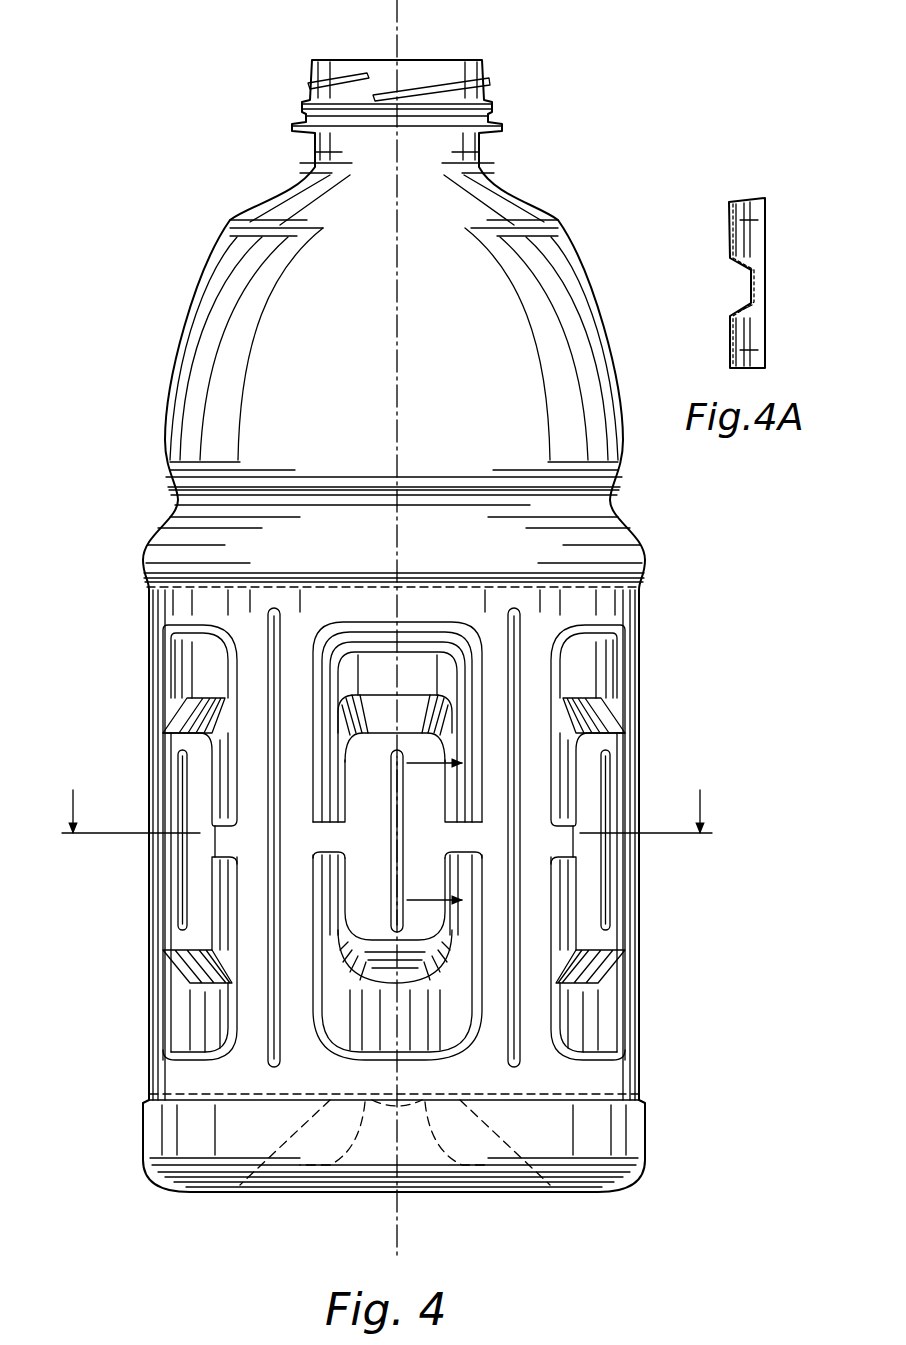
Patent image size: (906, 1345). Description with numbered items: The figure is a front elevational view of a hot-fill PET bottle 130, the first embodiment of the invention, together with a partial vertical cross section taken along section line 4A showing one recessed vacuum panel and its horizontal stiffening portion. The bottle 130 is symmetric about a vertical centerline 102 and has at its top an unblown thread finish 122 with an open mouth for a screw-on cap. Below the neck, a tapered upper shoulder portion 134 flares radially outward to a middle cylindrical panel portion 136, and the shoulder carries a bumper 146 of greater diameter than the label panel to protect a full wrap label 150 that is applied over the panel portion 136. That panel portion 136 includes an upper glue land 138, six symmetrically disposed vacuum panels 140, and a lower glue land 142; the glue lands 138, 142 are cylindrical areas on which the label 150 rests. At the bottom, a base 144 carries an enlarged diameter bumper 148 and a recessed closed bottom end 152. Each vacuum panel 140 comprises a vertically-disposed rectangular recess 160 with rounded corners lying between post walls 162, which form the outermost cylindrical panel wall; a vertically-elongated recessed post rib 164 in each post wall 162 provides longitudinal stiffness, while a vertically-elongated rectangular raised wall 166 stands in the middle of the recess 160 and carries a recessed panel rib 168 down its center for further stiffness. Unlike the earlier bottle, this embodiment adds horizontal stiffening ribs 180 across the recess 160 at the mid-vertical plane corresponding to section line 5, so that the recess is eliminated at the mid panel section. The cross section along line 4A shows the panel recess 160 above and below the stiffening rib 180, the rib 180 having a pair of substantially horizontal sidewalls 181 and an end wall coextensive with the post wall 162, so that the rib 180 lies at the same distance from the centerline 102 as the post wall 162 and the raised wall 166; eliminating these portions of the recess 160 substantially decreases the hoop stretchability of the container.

In FIG. 4, the vertical centerline 102 is at (398, 42).
In FIG. 4, the thread finish 122 is at (306, 102).
In FIG. 4, the bottle 130 is at (170, 330).
In FIG. 4, the upper shoulder portion 134 is at (200, 280).
In FIG. 4, the panel portion 136 is at (147, 650).
In FIG. 4, the upper glue land 138 is at (615, 600).
In FIG. 4, the vacuum panel 140 is at (380, 660).
In FIG. 4, the lower glue land 142 is at (620, 1075).
In FIG. 4, the base 144 is at (630, 1168).
In FIG. 4, the bumper 146 is at (642, 558).
In FIG. 4, the bumper 148 is at (640, 1108).
In FIG. 4, the label 150 is at (147, 592).
In FIG. 4, the recessed closed bottom end 152 is at (490, 1165).
In FIG. 4, the vacuum panel recess 160 is at (412, 650).
In FIG. 4A, the vacuum panel recess 160 is at (745, 232).
In FIG. 4, the post wall 162 is at (290, 655).
In FIG. 4A, the post wall 162 is at (765, 338).
In FIG. 4, the post rib 164 is at (275, 712).
In FIG. 4, the raised wall 166 is at (170, 790).
In FIG. 4, the panel rib 168 is at (180, 772).
In FIG. 4, the horizontal stiffening rib 180 is at (200, 890).
In FIG. 4A, the horizontal stiffening rib 180 is at (762, 285).
In FIG. 4A, the sidewalls 181 is at (752, 266).
In FIG. 4, the section line 5- 5 is at (387, 797).
In FIG. 4, the section line 4A- 4A is at (407, 836).